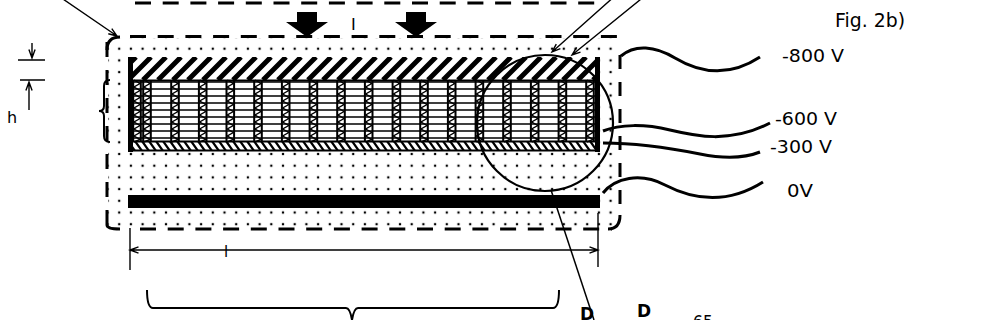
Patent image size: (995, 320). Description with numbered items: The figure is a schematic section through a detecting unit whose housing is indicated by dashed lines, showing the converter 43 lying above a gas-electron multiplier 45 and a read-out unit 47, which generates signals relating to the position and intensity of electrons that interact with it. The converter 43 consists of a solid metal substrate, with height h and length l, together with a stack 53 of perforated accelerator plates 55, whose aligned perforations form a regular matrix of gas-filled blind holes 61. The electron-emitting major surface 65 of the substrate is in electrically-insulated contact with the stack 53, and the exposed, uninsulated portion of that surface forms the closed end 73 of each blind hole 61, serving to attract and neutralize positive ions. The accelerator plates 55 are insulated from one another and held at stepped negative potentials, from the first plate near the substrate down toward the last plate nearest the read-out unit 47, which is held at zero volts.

The converter 43 is at (600, 56).
The gas-electron multiplier 45 is at (612, 146).
The read-out unit 47 is at (612, 209).
The stack 53 is at (99, 111).
The perforated accelerator plates 55 is at (610, 76).
The gas-filled blind holes 61 is at (232, 117).
The electron-emitting major surface 65 is at (190, 82).
The closed end 73 is at (778, 316).